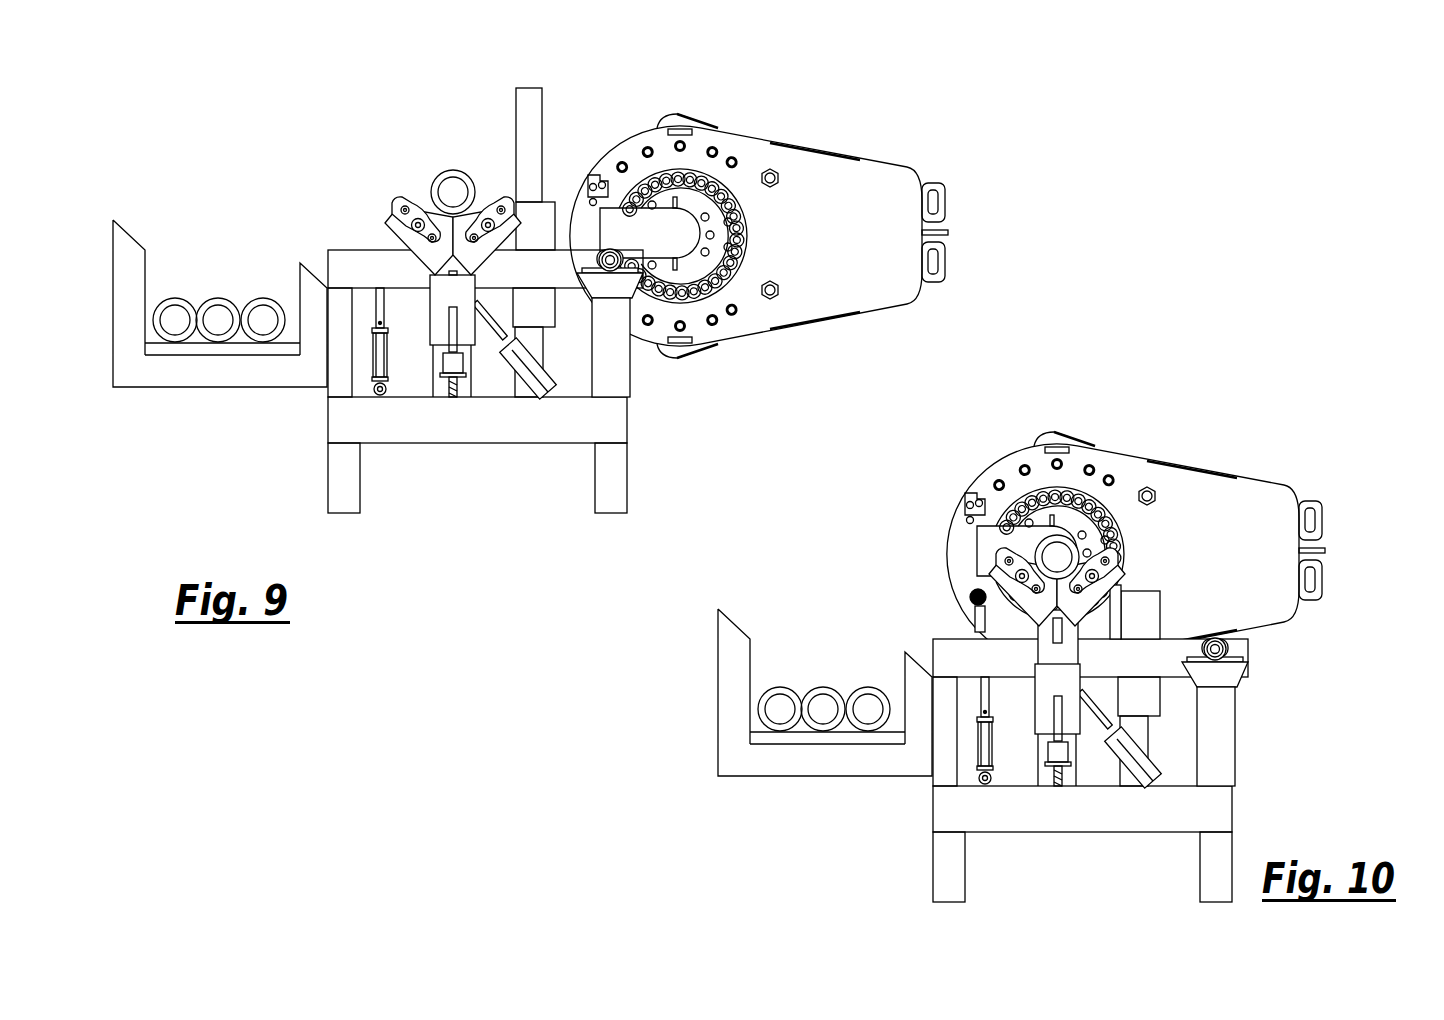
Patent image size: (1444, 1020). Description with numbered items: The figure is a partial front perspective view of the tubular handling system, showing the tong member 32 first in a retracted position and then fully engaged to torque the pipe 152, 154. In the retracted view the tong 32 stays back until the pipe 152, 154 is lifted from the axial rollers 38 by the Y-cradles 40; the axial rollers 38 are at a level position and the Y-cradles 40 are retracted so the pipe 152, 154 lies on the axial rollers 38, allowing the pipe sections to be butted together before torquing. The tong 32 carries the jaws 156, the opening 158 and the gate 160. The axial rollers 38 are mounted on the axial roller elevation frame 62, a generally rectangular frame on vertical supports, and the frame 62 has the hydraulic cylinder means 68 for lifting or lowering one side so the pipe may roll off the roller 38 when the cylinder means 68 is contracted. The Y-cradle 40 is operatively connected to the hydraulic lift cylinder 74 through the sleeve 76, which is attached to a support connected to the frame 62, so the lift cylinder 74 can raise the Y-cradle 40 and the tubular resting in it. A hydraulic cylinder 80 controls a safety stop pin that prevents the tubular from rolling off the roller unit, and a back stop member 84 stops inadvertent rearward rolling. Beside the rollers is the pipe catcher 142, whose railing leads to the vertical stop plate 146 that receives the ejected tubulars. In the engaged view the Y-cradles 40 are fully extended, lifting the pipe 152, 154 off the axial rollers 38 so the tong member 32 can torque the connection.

In FIG. 9, the tong member 32 is at (860, 200).
In FIG. 10, the tong member 32 is at (1218, 505).
In FIG. 9, the axial roller 38 is at (420, 206).
In FIG. 10, the axial roller 38 is at (1010, 622).
In FIG. 9, the Y-cradle 40 is at (405, 227).
In FIG. 10, the Y-cradle 40 is at (1005, 572).
In FIG. 9, the axial roller elevation frame 62 is at (342, 252).
In FIG. 10, the axial roller elevation frame 62 is at (947, 641).
In FIG. 9, the hydraulic cylinder means 68 is at (540, 382).
In FIG. 10, the hydraulic cylinder means 68 is at (1142, 772).
In FIG. 9, the hydraulic lift cylinder 74 is at (455, 362).
In FIG. 10, the hydraulic lift cylinder 74 is at (1060, 752).
In FIG. 9, the sleeve 76 is at (442, 320).
In FIG. 10, the sleeve 76 is at (1047, 707).
In FIG. 9, the hydraulic cylinder 80 is at (378, 357).
In FIG. 10, the hydraulic cylinder 80 is at (982, 746).
In FIG. 9, the back stop member 84 is at (535, 107).
In FIG. 9, the pipe catcher 142 is at (189, 406).
In FIG. 10, the pipe catcher 142 is at (795, 797).
In FIG. 9, the vertical stop plate 146 is at (133, 258).
In FIG. 10, the vertical stop plate 146 is at (740, 648).
In FIG. 9, the pipe 152 is at (424, 131).
In FIG. 10, the pipe 152 is at (1008, 484).
In FIG. 9, the pipe 154 is at (453, 170).
In FIG. 10, the pipe 154 is at (1057, 534).
In FIG. 9, the jaws 156 is at (700, 195).
In FIG. 10, the jaws 156 is at (1078, 515).
In FIG. 9, the opening 158 is at (643, 233).
In FIG. 10, the opening 158 is at (1025, 538).
In FIG. 9, the gate 160 is at (582, 220).